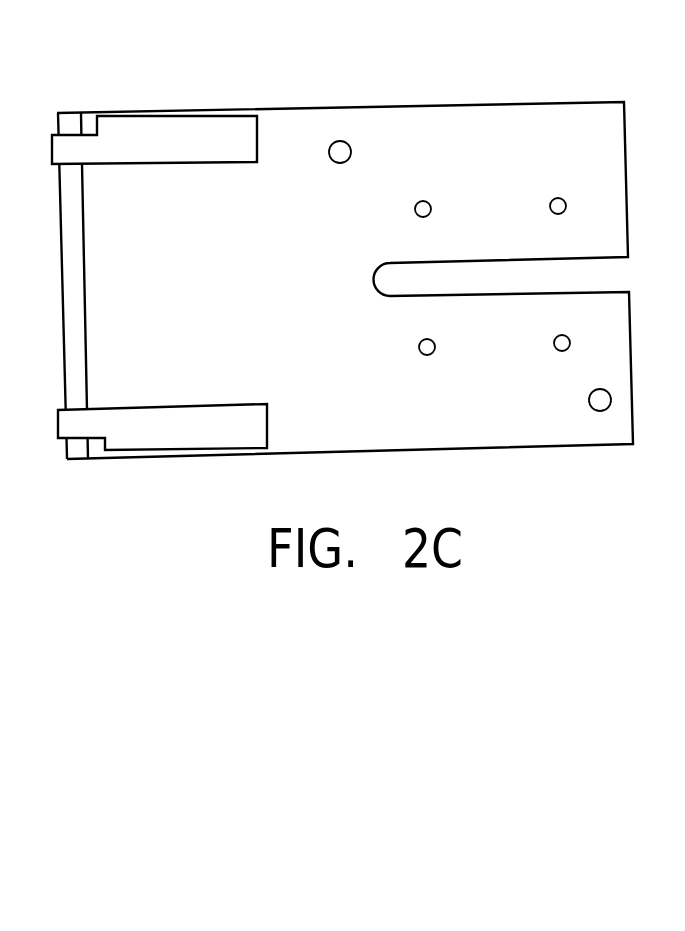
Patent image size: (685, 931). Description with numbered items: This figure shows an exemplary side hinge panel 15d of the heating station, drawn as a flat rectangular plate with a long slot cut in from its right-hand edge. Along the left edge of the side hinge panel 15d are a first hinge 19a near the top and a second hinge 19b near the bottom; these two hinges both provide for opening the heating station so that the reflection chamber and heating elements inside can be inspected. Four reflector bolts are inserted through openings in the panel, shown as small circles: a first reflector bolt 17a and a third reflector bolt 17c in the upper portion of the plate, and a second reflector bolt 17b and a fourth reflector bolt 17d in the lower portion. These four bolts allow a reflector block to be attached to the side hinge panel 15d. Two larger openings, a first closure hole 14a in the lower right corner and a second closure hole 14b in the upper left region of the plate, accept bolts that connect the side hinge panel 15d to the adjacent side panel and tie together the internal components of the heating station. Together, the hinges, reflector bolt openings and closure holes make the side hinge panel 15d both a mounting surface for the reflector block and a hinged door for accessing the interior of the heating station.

The side hinge panel 15d is at (455, 437).
The first hinge 19a is at (212, 118).
The second hinge 19b is at (222, 437).
The first closure hole 14a is at (592, 406).
The second closure hole 14b is at (338, 163).
The first reflector bolt 17a is at (554, 213).
The second reflector bolt 17b is at (560, 351).
The third reflector bolt 17c is at (426, 202).
The fourth reflector bolt 17d is at (424, 355).